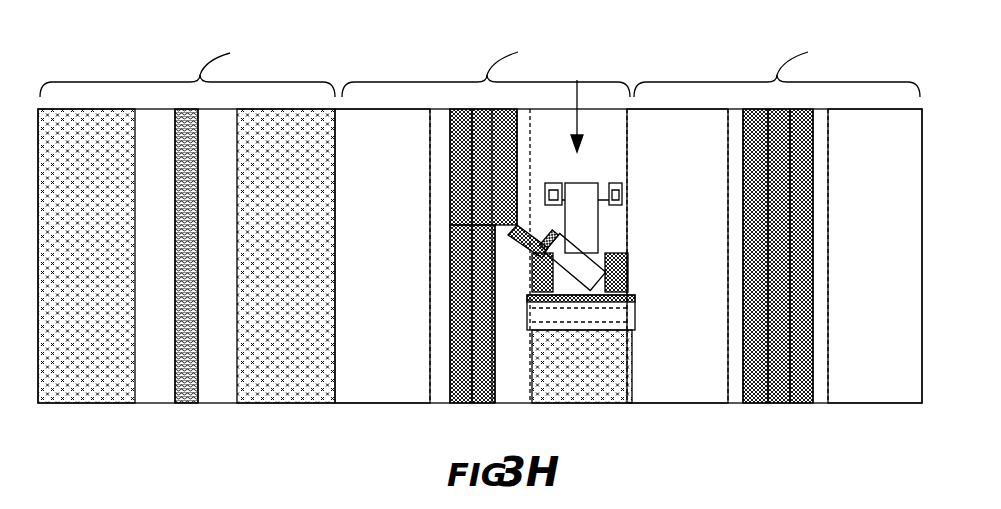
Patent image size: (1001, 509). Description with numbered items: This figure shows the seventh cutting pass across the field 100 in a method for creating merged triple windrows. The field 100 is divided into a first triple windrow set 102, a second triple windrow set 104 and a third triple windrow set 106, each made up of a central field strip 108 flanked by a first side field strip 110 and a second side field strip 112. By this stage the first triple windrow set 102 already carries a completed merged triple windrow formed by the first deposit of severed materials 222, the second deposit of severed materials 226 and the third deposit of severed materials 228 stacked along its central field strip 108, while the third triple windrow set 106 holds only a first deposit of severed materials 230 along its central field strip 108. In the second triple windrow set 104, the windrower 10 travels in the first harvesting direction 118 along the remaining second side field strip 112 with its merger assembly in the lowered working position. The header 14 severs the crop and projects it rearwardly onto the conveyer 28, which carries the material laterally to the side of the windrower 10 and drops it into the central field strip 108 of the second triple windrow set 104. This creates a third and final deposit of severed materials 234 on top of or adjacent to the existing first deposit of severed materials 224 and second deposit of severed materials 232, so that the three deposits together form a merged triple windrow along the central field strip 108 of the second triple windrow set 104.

The field 100 is at (78, 63).
The first triple windrow set 102 is at (777, 64).
The second triple windrow set 104 is at (486, 64).
The third triple windrow set 106 is at (187, 65).
The central field strip 108 is at (205, 392).
The first side field strip 110 is at (105, 395).
The second side field strip 112 is at (295, 392).
The first harvesting direction 118 is at (582, 112).
The windrower 10 is at (580, 198).
The conveyer 28 is at (585, 265).
The header 14 is at (596, 312).
The first deposit of severed materials 222 is at (775, 385).
The first deposit of severed materials 224 is at (450, 135).
The second deposit of severed materials 226 is at (805, 228).
The third deposit of severed materials 228 is at (752, 278).
The first deposit of severed materials 230 is at (175, 158).
The second deposit of severed materials 232 is at (450, 280).
The third deposit of severed materials 234 is at (450, 183).